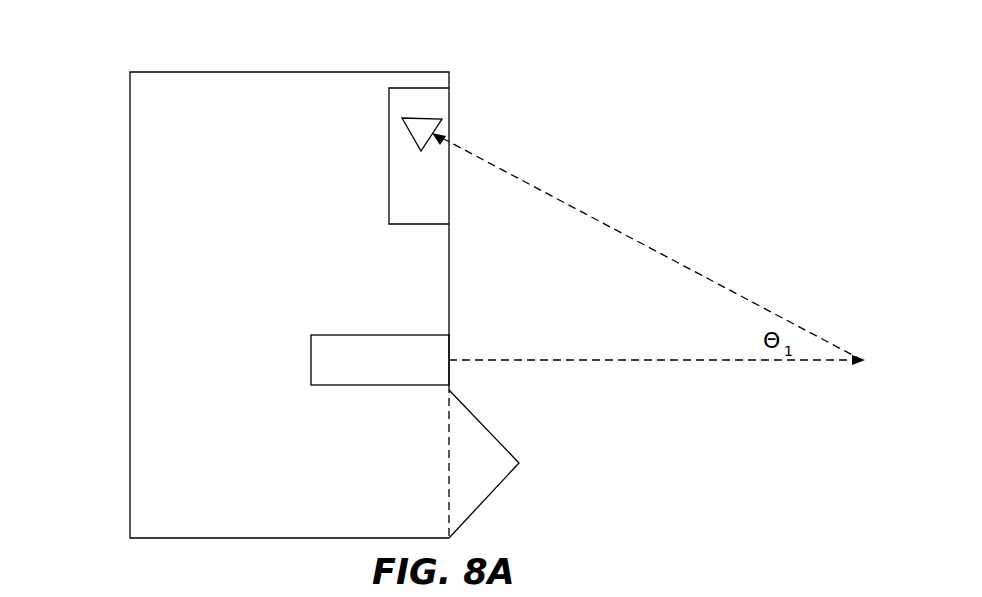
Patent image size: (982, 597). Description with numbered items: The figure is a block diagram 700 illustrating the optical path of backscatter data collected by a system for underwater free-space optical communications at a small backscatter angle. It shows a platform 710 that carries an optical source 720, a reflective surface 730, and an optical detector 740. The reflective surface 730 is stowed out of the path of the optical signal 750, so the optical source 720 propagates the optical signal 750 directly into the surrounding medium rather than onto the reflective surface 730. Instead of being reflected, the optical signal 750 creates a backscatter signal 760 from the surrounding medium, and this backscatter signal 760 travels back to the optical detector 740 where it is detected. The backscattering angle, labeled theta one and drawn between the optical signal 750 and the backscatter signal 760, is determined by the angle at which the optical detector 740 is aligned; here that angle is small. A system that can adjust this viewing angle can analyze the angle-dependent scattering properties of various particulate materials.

The block diagram 700 is at (108, 61).
The platform 710 is at (140, 226).
The optical source 720 is at (449, 343).
The reflective surface 730 is at (500, 448).
The optical detector 740 is at (441, 117).
The optical signal 750 is at (698, 362).
The backscatter signal 760 is at (673, 260).